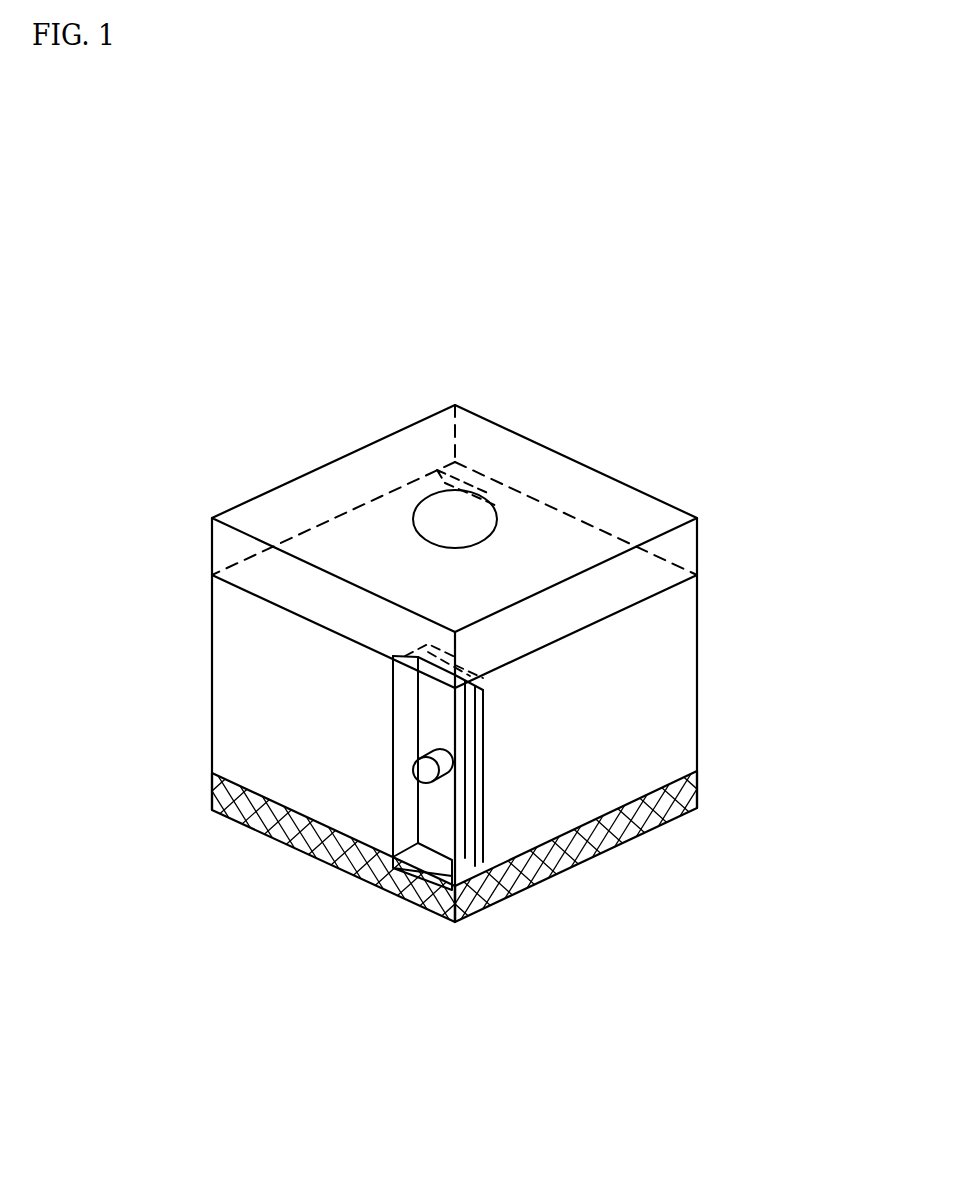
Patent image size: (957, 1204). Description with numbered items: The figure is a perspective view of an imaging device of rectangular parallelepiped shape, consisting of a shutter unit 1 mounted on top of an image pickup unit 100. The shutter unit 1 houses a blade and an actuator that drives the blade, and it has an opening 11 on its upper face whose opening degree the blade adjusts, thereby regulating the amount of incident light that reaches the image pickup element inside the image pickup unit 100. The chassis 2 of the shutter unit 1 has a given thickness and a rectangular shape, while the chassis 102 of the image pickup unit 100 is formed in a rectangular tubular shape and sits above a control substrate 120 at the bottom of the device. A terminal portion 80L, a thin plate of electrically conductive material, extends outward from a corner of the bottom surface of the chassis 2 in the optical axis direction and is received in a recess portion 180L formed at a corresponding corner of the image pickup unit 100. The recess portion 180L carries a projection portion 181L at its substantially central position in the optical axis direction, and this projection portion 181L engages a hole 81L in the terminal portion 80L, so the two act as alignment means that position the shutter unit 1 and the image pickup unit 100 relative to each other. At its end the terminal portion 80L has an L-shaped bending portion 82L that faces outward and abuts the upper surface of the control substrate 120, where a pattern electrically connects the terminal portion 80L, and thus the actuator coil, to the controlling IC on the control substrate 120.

The shutter unit 1 is at (461, 663).
The chassis 2 is at (555, 478).
The opening 11 is at (437, 513).
The image pickup unit 100 is at (452, 674).
The chassis 102 is at (240, 643).
The control substrate 120 is at (283, 825).
The recess portion 180L is at (375, 802).
The projection portion 181L is at (452, 826).
The terminal portion 80L is at (394, 822).
The hole 81L is at (447, 757).
The bending portion 82L is at (400, 885).